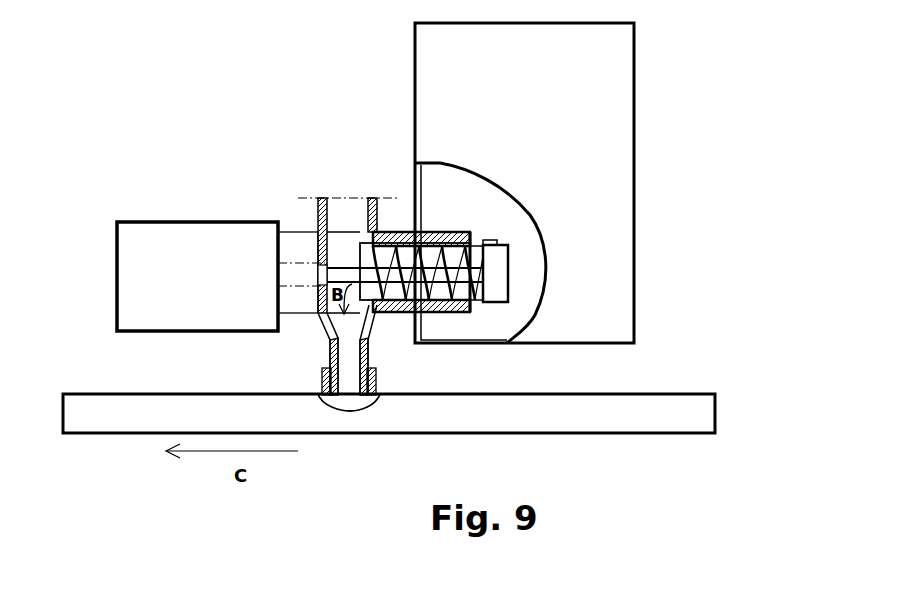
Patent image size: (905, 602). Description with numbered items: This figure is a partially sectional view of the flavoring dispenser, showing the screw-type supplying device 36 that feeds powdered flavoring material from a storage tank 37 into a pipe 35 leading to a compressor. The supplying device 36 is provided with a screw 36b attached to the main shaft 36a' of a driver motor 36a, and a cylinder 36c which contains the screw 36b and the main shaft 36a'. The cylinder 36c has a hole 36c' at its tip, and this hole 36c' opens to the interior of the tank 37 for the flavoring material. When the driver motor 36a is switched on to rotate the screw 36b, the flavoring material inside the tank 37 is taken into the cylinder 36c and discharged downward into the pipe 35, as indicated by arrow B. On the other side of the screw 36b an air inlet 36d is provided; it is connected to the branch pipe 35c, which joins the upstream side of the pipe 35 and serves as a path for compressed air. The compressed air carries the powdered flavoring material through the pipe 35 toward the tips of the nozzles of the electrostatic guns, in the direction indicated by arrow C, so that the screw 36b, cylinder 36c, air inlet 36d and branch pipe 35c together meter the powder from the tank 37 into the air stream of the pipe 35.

The pipe 35 is at (578, 400).
The branch pipe 35c is at (327, 333).
The screw-type supplying device 36 is at (300, 226).
The driver motor 36a is at (197, 250).
The main shaft 36a' is at (340, 282).
The screw 36b is at (390, 315).
The cylinder 36c is at (489, 293).
The hole 36c' is at (475, 217).
The air inlet 36d is at (364, 196).
The storage tank 37 is at (626, 86).